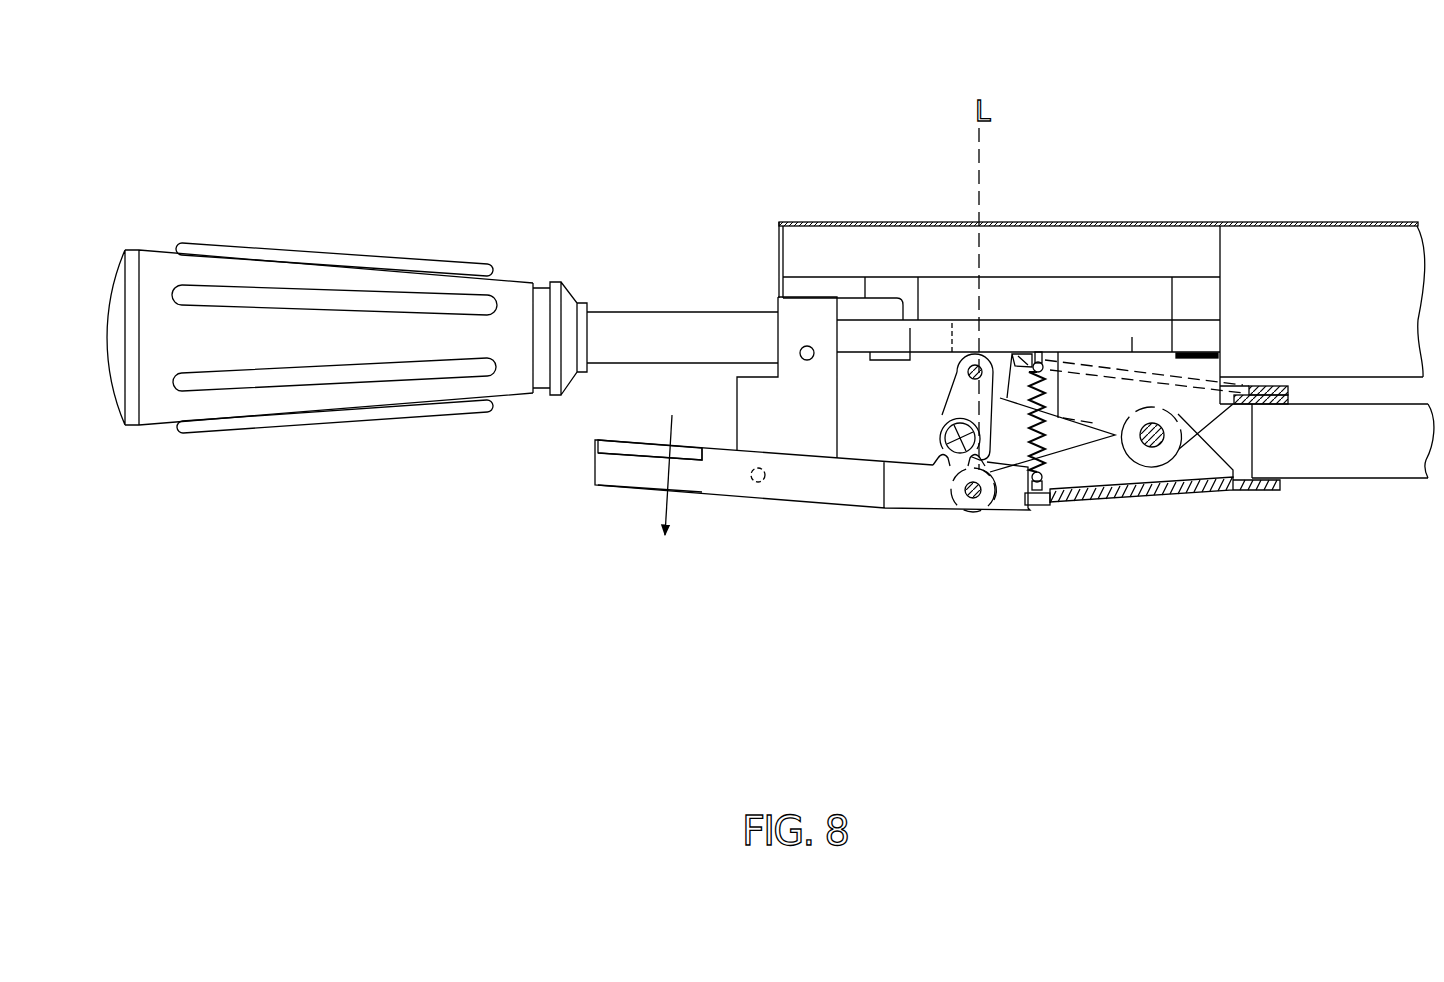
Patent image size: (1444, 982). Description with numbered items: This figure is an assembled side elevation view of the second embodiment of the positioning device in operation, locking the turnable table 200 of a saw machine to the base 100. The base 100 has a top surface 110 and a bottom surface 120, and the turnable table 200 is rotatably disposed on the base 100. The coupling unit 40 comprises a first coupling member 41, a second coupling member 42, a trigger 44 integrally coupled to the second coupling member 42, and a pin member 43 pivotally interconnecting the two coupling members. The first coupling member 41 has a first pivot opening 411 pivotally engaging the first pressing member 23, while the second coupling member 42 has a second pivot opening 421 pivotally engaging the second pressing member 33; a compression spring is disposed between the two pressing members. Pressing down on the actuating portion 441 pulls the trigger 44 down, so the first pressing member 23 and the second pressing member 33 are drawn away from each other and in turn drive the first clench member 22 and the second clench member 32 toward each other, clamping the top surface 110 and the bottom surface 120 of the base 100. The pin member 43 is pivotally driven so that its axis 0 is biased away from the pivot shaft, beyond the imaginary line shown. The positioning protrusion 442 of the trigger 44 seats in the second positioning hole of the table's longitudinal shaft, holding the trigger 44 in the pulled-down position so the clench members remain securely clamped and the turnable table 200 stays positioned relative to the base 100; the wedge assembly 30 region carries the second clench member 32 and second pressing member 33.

The turnable table 200 is at (1198, 214).
The base 100 is at (1393, 480).
The top surface 110 is at (1273, 407).
The bottom surface 120 is at (1262, 475).
The first clench member 22 is at (1258, 387).
The first pressing member 23 is at (1019, 356).
The wedge assembly 30 is at (1178, 497).
The second clench member 32 is at (1268, 490).
The second pressing member 33 is at (988, 506).
The coupling unit 40 is at (797, 485).
The first coupling member 41 is at (940, 412).
The first pivot opening 411 is at (985, 360).
The second coupling member 42 is at (907, 496).
The second pivot opening 421 is at (974, 500).
The pin member 43 is at (943, 470).
The trigger 44 is at (597, 462).
The actuating portion 441 is at (638, 478).
The positioning protrusion 442 is at (757, 483).
The axis 0 is at (956, 428).